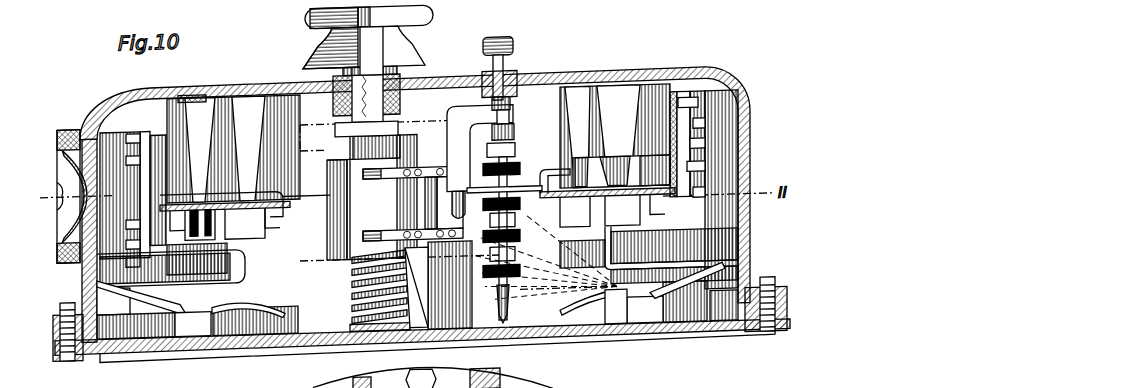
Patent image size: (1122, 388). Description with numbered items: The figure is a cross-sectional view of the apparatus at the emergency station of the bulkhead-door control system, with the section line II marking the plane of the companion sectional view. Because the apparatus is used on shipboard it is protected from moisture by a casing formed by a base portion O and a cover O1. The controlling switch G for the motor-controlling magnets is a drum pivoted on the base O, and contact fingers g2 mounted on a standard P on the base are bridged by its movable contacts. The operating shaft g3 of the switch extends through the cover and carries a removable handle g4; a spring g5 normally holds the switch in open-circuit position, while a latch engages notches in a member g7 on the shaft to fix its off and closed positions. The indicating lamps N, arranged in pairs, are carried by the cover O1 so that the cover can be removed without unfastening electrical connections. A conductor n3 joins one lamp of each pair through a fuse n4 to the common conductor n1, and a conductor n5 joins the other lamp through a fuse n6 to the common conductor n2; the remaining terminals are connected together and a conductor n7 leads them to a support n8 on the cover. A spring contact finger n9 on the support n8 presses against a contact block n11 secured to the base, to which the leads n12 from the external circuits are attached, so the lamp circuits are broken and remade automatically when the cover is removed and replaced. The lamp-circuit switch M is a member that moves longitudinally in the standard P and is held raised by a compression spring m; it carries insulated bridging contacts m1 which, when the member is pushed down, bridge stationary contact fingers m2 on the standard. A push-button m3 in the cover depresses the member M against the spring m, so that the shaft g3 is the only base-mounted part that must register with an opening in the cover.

The indicating lamps N is at (255, 92).
The base portion O is at (688, 356).
The cover O1 is at (738, 104).
The controlling switch G is at (330, 240).
The standard P is at (464, 140).
The switch M is at (512, 132).
The compression spring m is at (510, 316).
The insulated bridging contacts m1 is at (522, 248).
The stationary contact-fingers m2 is at (522, 192).
The push-button m3 is at (514, 58).
The contact fingers g2 is at (374, 242).
The operating shaft g3 is at (398, 90).
The handle g4 is at (433, 24).
The spring g5 is at (352, 297).
The notched member g7 is at (416, 148).
The common conductor n1 is at (134, 133).
The common conductor n2 is at (137, 258).
The conductor n3 is at (278, 202).
The fuse n4 is at (135, 156).
The conductor n5 is at (136, 219).
The fuse n6 is at (136, 239).
The conductor n7 is at (230, 286).
The support n8 is at (113, 300).
The spring contact finger n9 is at (180, 308).
The contact block n11 is at (192, 322).
The leads n12 is at (272, 324).
The section line II is at (68, 197).